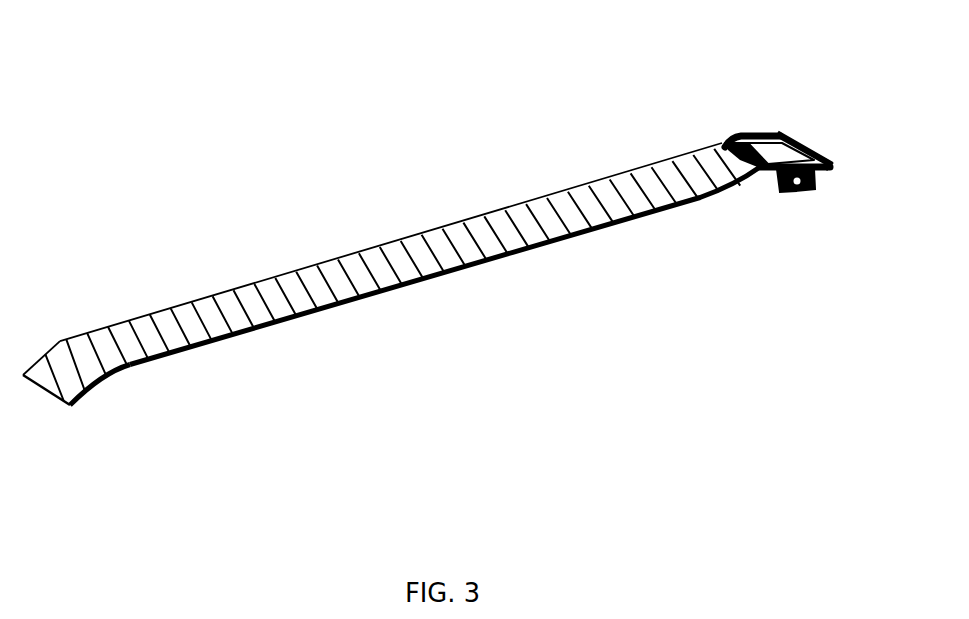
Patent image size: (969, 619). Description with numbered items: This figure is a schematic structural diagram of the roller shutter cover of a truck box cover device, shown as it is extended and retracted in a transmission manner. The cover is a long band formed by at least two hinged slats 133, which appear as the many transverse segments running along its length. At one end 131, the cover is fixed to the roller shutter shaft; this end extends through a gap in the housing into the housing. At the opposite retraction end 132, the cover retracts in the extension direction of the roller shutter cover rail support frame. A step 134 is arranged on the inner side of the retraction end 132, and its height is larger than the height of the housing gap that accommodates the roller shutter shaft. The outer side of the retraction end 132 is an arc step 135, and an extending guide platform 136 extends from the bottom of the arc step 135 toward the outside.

The end of the roller shutter cover 131 is at (80, 407).
The retraction end of the roller shutter cover 132 is at (783, 118).
The hinged slats 133 is at (472, 253).
The step 134 is at (730, 137).
The arc step 135 is at (772, 185).
The extending guide platform 136 is at (800, 193).